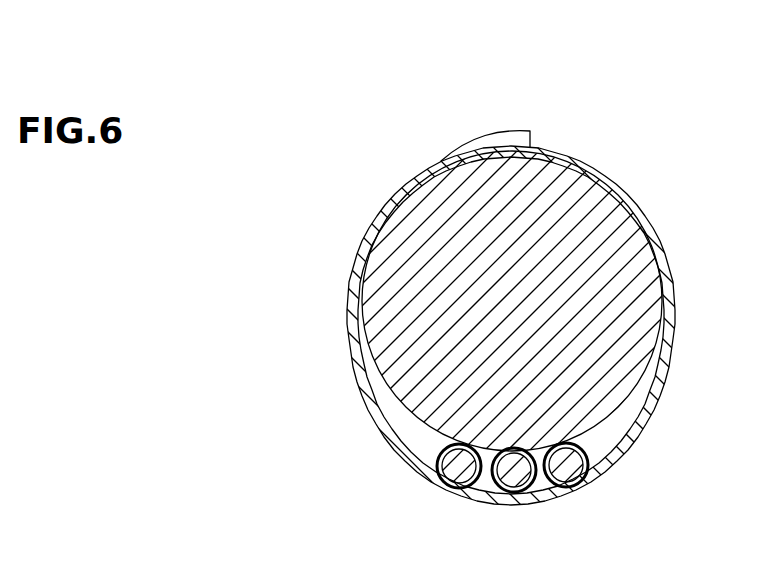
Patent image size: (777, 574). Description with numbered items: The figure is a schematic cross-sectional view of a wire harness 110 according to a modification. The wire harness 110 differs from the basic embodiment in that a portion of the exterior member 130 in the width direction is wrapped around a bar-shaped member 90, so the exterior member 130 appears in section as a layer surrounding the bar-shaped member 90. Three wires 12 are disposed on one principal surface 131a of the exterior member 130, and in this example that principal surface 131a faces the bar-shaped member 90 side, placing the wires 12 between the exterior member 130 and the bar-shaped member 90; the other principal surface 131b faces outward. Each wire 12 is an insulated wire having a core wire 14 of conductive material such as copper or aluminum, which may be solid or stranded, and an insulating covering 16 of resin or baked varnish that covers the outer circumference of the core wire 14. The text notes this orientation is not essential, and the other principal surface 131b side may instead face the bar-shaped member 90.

The wire harness 110 is at (366, 92).
The exterior member 130 is at (388, 287).
The one principal surface 131a is at (620, 440).
The other principal surface 131b is at (620, 458).
The bar-shaped member 90 is at (634, 350).
The wire 12 is at (388, 287).
The core wire 14 is at (460, 482).
The insulating covering 16 is at (444, 483).